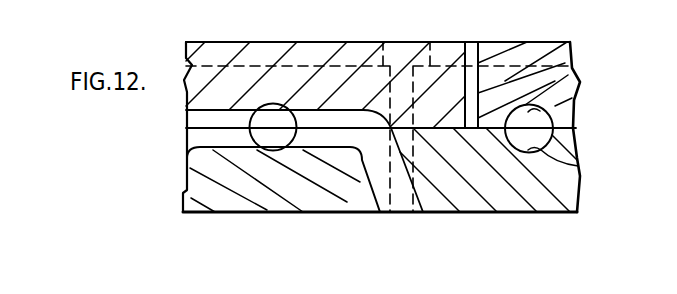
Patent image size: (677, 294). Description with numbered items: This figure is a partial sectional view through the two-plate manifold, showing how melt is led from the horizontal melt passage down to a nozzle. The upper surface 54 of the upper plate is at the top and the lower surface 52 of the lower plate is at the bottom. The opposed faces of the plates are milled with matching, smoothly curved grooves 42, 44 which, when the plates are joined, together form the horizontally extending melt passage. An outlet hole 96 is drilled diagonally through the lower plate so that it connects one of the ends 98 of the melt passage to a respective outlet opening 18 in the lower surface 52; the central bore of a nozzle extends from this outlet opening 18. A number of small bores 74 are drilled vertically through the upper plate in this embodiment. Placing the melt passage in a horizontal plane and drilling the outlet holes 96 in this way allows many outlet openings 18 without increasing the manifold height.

The upper surface 54 is at (208, 42).
The small bores 74 is at (572, 71).
The outlet openings 18 is at (382, 214).
The ends of the melt passage 98 is at (270, 105).
The groove 42 is at (552, 112).
The outlet holes 96 is at (377, 173).
The groove 44 is at (578, 163).
The lower surface 52 is at (497, 214).